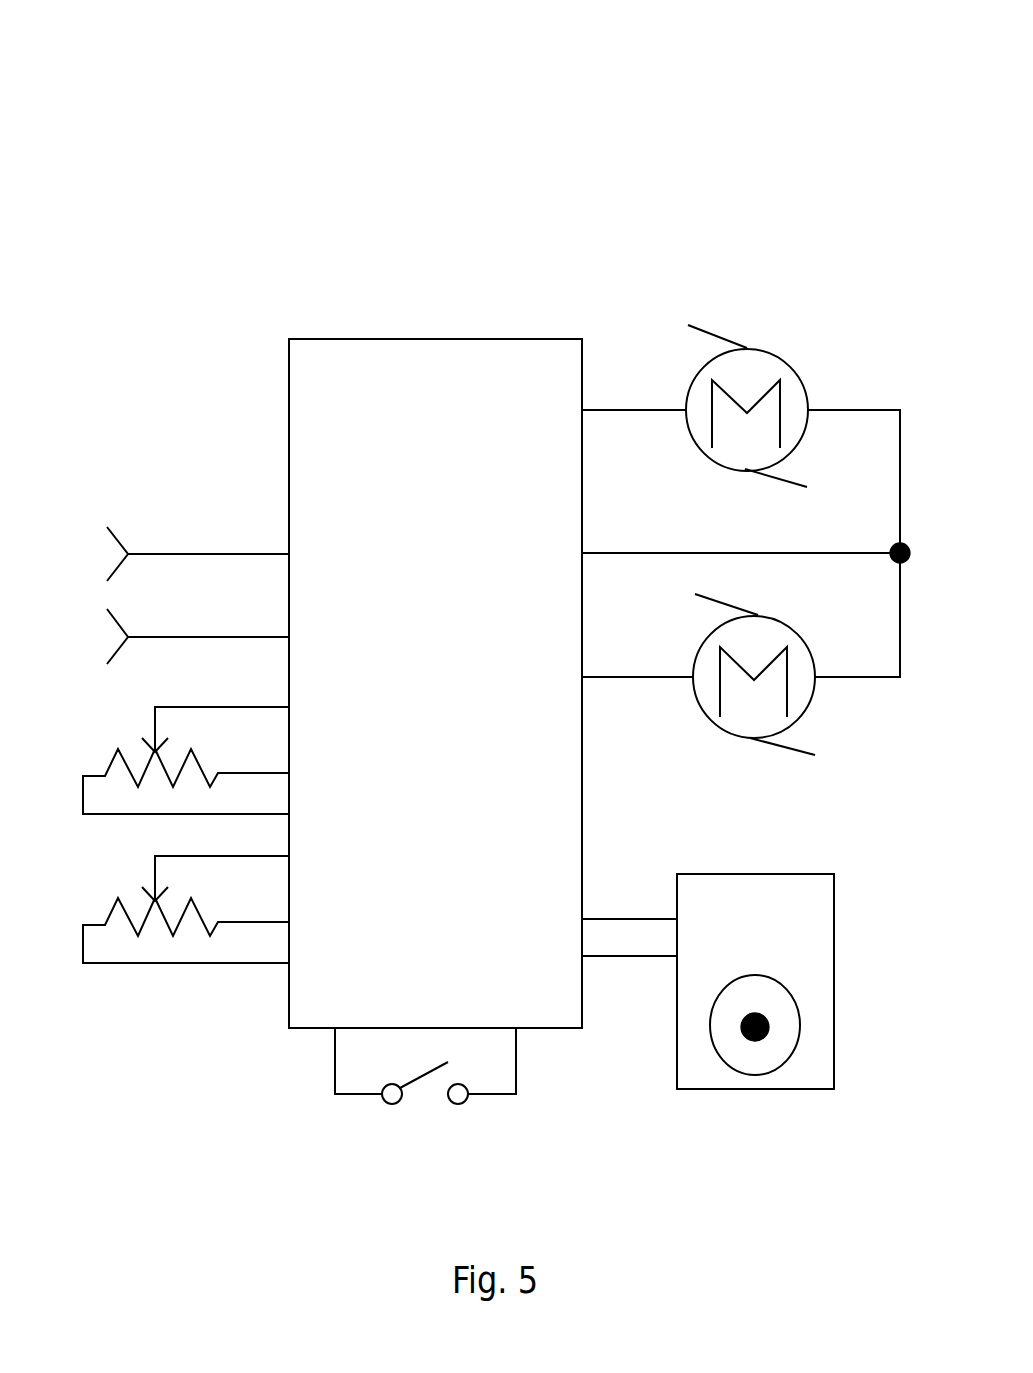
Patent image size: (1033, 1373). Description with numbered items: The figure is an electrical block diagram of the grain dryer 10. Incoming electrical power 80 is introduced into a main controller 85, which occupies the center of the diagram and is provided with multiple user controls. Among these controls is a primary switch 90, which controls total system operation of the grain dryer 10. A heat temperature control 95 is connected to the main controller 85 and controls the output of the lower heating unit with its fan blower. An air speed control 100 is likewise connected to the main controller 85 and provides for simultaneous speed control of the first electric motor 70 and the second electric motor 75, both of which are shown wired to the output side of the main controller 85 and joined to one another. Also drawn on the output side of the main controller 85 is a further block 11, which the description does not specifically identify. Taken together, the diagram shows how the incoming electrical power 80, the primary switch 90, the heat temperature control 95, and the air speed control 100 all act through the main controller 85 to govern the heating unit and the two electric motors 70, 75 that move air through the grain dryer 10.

The grain dryer 10 is at (112, 174).
The camera 11 is at (800, 939).
The first electric motor 70 is at (762, 373).
The second electric motor 75 is at (797, 682).
The incoming electrical power 80 is at (121, 530).
The main controller 85 is at (418, 392).
The primary switch 90 is at (517, 1097).
The heat temperature control 95 is at (138, 787).
The air speed control 100 is at (200, 937).